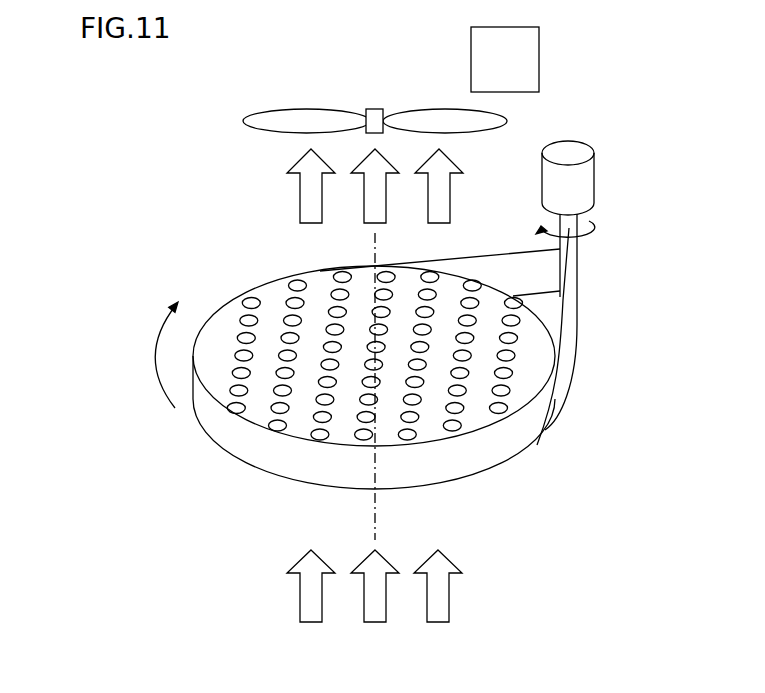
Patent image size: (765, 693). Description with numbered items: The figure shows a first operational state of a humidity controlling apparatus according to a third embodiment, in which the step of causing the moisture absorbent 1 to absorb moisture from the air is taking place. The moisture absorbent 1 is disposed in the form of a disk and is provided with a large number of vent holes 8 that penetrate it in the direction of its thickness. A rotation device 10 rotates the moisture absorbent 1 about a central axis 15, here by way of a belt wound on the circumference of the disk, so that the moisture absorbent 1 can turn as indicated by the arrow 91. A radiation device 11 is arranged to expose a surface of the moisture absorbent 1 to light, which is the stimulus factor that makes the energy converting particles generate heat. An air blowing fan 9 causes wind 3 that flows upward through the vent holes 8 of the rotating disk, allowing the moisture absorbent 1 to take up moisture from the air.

The moisture absorbent 1 is at (279, 451).
The wind 3 is at (450, 600).
The vent holes 8 is at (467, 408).
The air blowing fan 9 is at (248, 123).
The rotation device 10 is at (583, 185).
The radiation device 11 is at (528, 60).
The central axis 15 is at (372, 243).
The arrow 91 is at (150, 358).